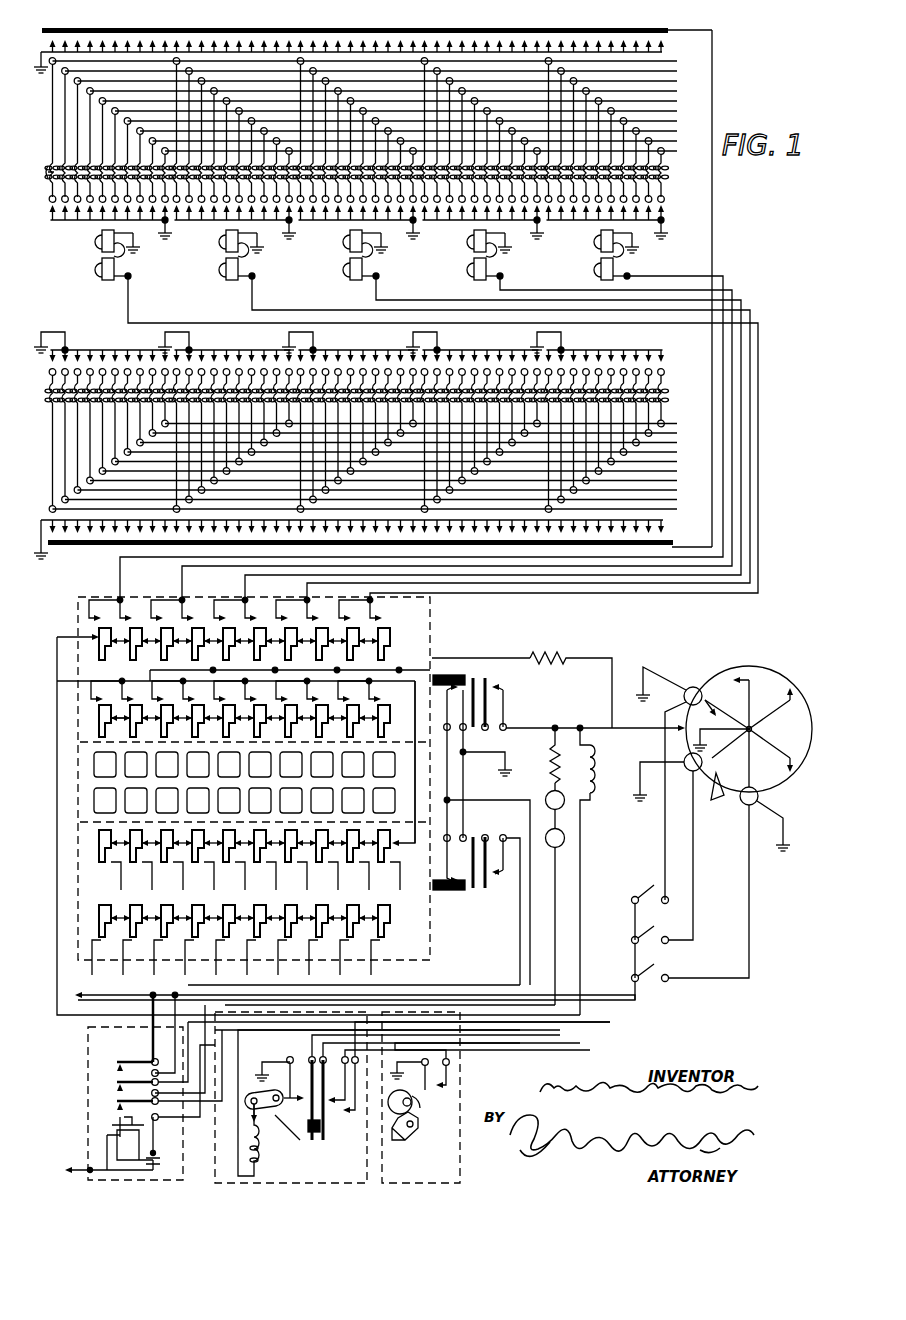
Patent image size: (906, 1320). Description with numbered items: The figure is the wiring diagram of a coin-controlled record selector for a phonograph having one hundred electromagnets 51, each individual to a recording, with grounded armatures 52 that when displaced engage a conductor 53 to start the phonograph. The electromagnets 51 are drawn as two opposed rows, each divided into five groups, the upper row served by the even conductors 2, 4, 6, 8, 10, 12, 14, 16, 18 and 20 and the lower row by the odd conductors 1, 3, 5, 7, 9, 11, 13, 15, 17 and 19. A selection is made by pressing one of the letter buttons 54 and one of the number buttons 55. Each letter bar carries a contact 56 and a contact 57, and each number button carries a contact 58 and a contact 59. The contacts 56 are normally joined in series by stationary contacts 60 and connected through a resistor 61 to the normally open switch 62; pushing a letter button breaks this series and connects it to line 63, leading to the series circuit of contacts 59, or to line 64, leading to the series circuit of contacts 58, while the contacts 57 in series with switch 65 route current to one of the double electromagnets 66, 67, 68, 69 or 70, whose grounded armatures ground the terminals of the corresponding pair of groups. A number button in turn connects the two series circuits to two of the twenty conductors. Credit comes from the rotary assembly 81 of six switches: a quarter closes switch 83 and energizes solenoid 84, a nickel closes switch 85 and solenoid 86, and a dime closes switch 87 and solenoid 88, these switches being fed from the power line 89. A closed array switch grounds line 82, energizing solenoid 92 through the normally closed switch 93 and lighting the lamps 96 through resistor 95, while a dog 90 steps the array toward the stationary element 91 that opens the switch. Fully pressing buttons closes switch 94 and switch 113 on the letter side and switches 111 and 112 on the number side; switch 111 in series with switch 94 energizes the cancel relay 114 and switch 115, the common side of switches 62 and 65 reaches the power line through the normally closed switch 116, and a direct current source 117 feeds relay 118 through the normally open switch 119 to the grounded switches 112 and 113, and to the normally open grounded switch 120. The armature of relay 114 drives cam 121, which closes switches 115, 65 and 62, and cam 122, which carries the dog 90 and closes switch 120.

The conductor 1 is at (428, 424).
The conductor 3 is at (429, 435).
The conductor 5 is at (415, 444).
The conductor 7 is at (417, 454).
The conductor 9 is at (403, 463).
The conductor 11 is at (408, 473).
The conductor 13 is at (395, 482).
The conductor 15 is at (396, 492).
The conductor 17 is at (382, 501).
The conductor 19 is at (383, 511).
The conductor 2 is at (435, 152).
The conductor 4 is at (422, 142).
The conductor 6 is at (422, 132).
The conductor 8 is at (410, 122).
The conductor 10 is at (414, 112).
The conductor 12 is at (401, 102).
The conductor 14 is at (402, 92).
The conductor 16 is at (389, 82).
The conductor 18 is at (389, 73).
The conductor 20 is at (376, 61).
The electromagnets 51 is at (678, 396).
The armatures 52 is at (115, 30).
The conductor 53 is at (165, 52).
The series of buttons 54 is at (92, 762).
The series of buttons 55 is at (94, 802).
The contact 56 is at (98, 738).
The contact 57 is at (220, 628).
The contact 58 is at (99, 844).
The contact 59 is at (99, 906).
The stationary contacts 60 is at (122, 721).
The resistor 61 is at (554, 658).
The switch 62 is at (345, 1128).
The line 63 is at (75, 681).
The line 64 is at (416, 782).
The switch 65 is at (325, 1126).
The double electromagnet 66 is at (601, 268).
The double electromagnet 67 is at (474, 268).
The double electromagnet 68 is at (350, 268).
The double electromagnet 69 is at (226, 268).
The double electromagnet 70 is at (102, 268).
The rotary assembly 81 is at (784, 773).
The line 82 is at (522, 728).
The switch 83 is at (656, 988).
The solenoid 84 is at (742, 805).
The switch 85 is at (660, 940).
The solenoid 86 is at (692, 772).
The switch 87 is at (654, 886).
The solenoid 88 is at (690, 686).
The power line 89 is at (120, 993).
The dog 90 is at (422, 1118).
The stationary element 91 is at (738, 770).
The solenoid 92 is at (591, 873).
The switch 93 is at (118, 1092).
The switch 94 is at (478, 753).
The resistor 95 is at (550, 748).
The lamps 96 is at (549, 792).
The switch 111 is at (494, 882).
The switch 112 is at (456, 890).
The switch 113 is at (480, 672).
The cancel relay 114 is at (281, 1160).
The switch 115 is at (302, 1150).
The switch 116 is at (128, 1066).
The source of direct current 117 is at (74, 1170).
The relay 118 is at (110, 1140).
The switch 119 is at (120, 1104).
The switch 120 is at (448, 1088).
The cam 121 is at (278, 1120).
The cam 122 is at (394, 1136).